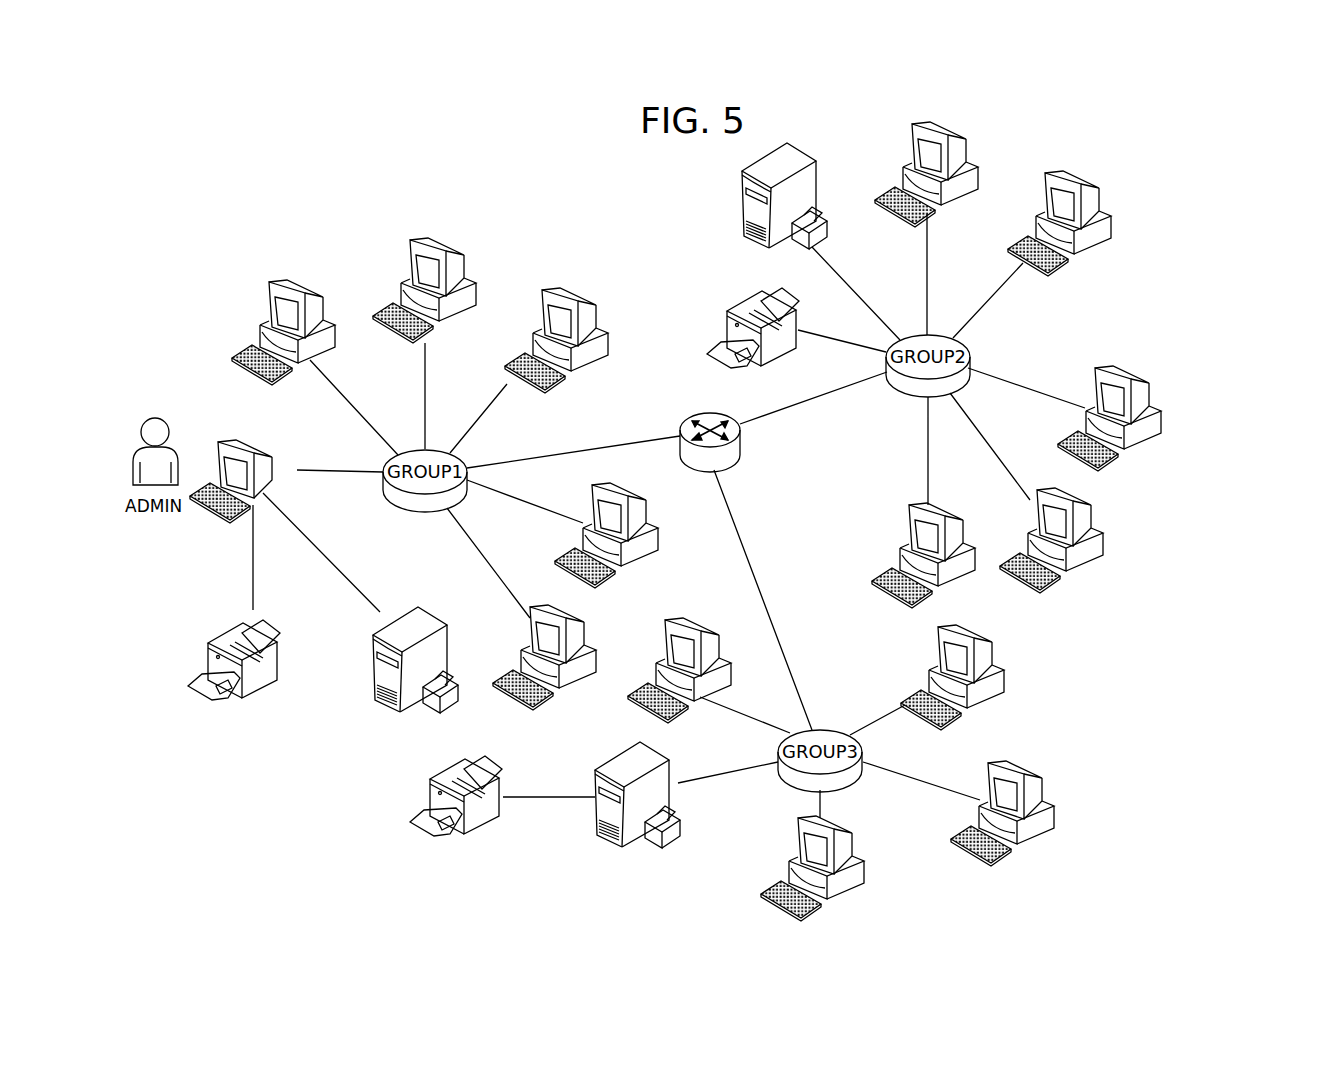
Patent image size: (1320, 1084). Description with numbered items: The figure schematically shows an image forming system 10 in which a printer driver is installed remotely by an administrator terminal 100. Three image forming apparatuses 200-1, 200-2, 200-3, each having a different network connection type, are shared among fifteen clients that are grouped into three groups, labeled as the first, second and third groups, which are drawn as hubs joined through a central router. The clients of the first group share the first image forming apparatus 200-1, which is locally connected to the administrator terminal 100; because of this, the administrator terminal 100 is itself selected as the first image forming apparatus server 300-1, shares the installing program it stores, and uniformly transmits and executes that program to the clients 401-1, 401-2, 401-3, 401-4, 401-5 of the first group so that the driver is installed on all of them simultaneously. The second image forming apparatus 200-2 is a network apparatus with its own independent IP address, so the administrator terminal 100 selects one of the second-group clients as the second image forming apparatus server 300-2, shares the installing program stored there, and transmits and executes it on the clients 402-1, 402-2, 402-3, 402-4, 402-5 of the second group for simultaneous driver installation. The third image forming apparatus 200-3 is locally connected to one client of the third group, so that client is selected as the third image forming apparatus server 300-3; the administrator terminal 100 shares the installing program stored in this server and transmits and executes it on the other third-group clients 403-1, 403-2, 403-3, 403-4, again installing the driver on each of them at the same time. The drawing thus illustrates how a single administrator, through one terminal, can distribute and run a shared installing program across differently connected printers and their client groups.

The image forming system 10 is at (1155, 140).
The administrator terminal 100 is at (218, 445).
The first image forming apparatus 200-1 is at (240, 700).
The second image forming apparatus 200-2 is at (724, 320).
The third image forming apparatus 200-3 is at (437, 835).
The first image forming apparatus server 300-1 is at (383, 705).
The second image forming apparatus server 300-2 is at (742, 178).
The third image forming apparatus server 300-3 is at (600, 760).
The client 401-1 is at (288, 282).
The client 401-2 is at (425, 240).
The client 401-3 is at (566, 290).
The client 401-4 is at (583, 528).
The client 401-5 is at (530, 624).
The client 402-1 is at (968, 140).
The client 402-2 is at (1103, 210).
The client 402-3 is at (1155, 405).
The client 402-4 is at (1100, 530).
The client 402-5 is at (892, 555).
The client 403-1 is at (690, 620).
The client 403-2 is at (998, 695).
The client 403-3 is at (1045, 822).
The client 403-4 is at (790, 870).